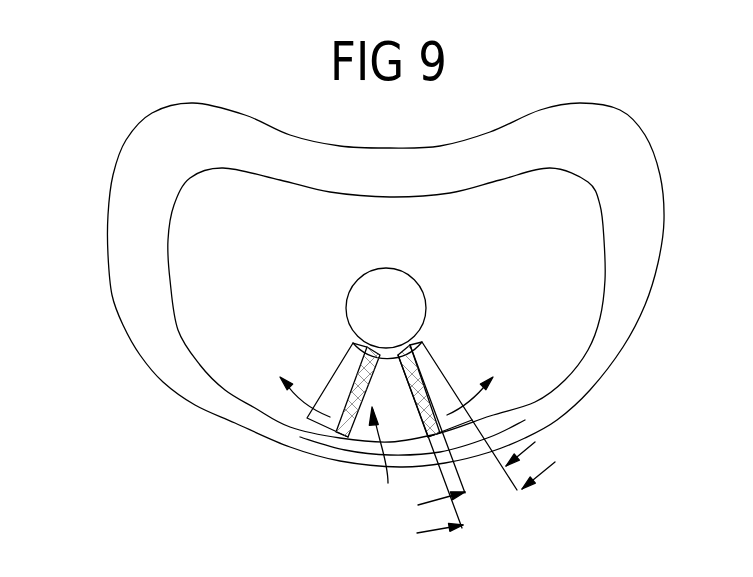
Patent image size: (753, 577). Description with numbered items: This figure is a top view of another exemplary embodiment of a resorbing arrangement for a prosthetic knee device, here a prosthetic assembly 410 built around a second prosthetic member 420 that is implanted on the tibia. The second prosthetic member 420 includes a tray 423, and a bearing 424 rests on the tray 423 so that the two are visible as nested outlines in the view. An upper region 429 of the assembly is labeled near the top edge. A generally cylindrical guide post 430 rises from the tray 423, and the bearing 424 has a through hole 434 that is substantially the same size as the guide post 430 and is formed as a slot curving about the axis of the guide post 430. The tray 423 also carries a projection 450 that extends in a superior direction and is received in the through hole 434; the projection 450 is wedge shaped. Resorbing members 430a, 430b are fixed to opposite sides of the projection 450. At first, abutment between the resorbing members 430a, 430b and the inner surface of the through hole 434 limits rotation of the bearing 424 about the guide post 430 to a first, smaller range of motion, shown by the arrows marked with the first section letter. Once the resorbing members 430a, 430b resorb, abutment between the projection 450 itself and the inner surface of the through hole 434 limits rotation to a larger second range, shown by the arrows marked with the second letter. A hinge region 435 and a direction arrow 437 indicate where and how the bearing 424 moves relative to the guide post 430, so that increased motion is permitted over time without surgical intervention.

The pacifier / device 410 is at (147, 120).
The second prosthetic member 420 is at (152, 321).
The tray 423 is at (183, 353).
The bearing 424 is at (180, 210).
The upper surface of shield 429 is at (228, 150).
The guide post 430 is at (414, 280).
The resorbing member 430a is at (412, 374).
The resorbing member 430b is at (330, 447).
The through hole 434 is at (336, 377).
The hinge of ring 435 is at (362, 340).
The gap / direction of movement 437 is at (388, 483).
The projection 450 is at (403, 352).